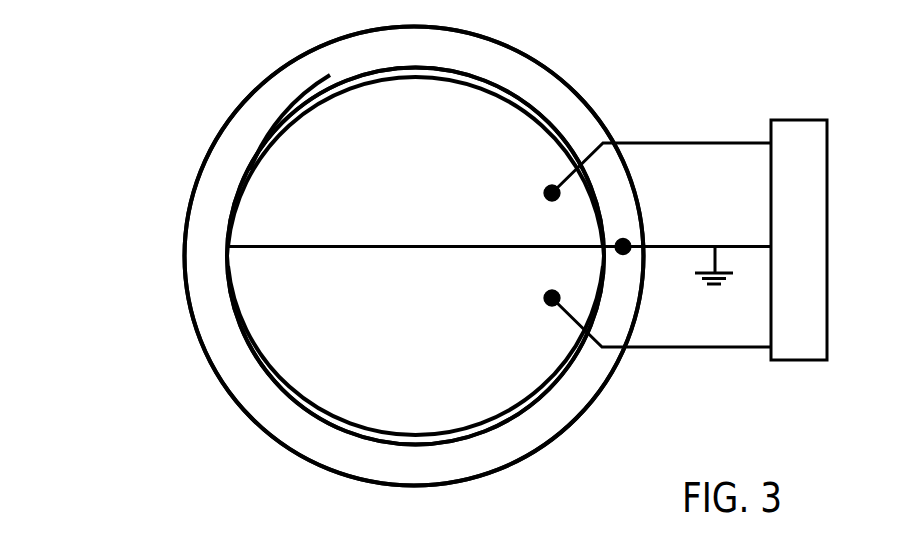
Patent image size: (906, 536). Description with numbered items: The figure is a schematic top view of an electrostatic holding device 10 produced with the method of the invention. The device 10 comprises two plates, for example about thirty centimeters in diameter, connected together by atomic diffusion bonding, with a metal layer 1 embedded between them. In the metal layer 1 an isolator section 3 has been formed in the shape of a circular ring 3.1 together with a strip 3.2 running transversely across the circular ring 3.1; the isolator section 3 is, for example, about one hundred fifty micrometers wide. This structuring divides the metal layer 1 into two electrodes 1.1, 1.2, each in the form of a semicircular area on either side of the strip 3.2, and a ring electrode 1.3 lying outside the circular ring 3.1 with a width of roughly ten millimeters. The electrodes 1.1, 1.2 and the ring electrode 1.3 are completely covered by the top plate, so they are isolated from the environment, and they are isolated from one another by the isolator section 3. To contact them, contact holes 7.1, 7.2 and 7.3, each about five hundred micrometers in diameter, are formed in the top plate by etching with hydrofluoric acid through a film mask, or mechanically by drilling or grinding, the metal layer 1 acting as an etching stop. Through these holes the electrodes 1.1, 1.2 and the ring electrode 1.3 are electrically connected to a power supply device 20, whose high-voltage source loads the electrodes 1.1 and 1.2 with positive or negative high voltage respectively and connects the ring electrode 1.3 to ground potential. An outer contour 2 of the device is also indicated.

The electrostatic holding device 10 is at (438, 267).
The metal layer 1 is at (428, 267).
The electrode 1.1 is at (376, 181).
The electrode 1.2 is at (376, 366).
The ring electrode 1.3 is at (228, 222).
The outer shell 2 is at (610, 125).
The isolator section 3 is at (525, 100).
The circular ring 3.1 is at (250, 170).
The strip 3.2 is at (330, 247).
The contact hole 7.1 is at (545, 190).
The contact hole 7.2 is at (545, 302).
The contact hole 7.3 is at (628, 250).
The power supply device 20 is at (813, 351).